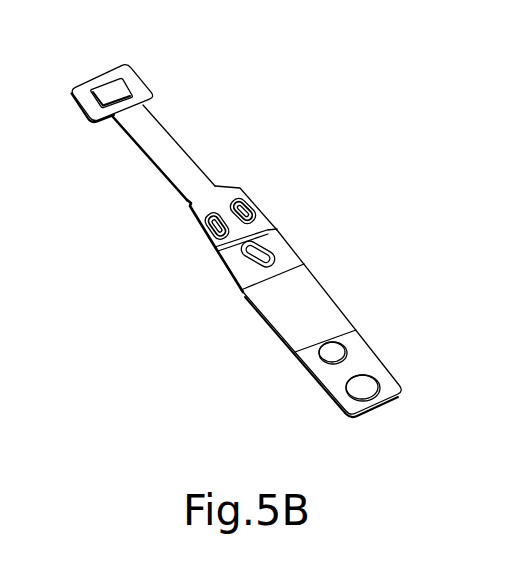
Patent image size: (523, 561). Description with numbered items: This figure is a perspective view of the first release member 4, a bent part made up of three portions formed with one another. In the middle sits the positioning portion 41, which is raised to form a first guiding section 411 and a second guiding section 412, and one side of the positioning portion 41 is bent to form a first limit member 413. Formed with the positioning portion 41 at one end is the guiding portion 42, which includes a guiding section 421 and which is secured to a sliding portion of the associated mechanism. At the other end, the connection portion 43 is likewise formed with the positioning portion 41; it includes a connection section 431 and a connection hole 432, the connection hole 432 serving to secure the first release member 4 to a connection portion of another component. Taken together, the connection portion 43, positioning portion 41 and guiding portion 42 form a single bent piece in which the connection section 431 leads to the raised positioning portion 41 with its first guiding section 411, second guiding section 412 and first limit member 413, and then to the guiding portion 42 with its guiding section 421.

The first release member 4 is at (336, 103).
The positioning portion 41 is at (232, 255).
The first guiding section 411 is at (214, 208).
The second guiding section 412 is at (257, 238).
The first limit member 413 is at (238, 204).
The guiding portion 42 is at (333, 373).
The guiding section 421 is at (285, 308).
The connection portion 43 is at (137, 85).
The connection section 431 is at (155, 132).
The connection hole 432 is at (110, 93).